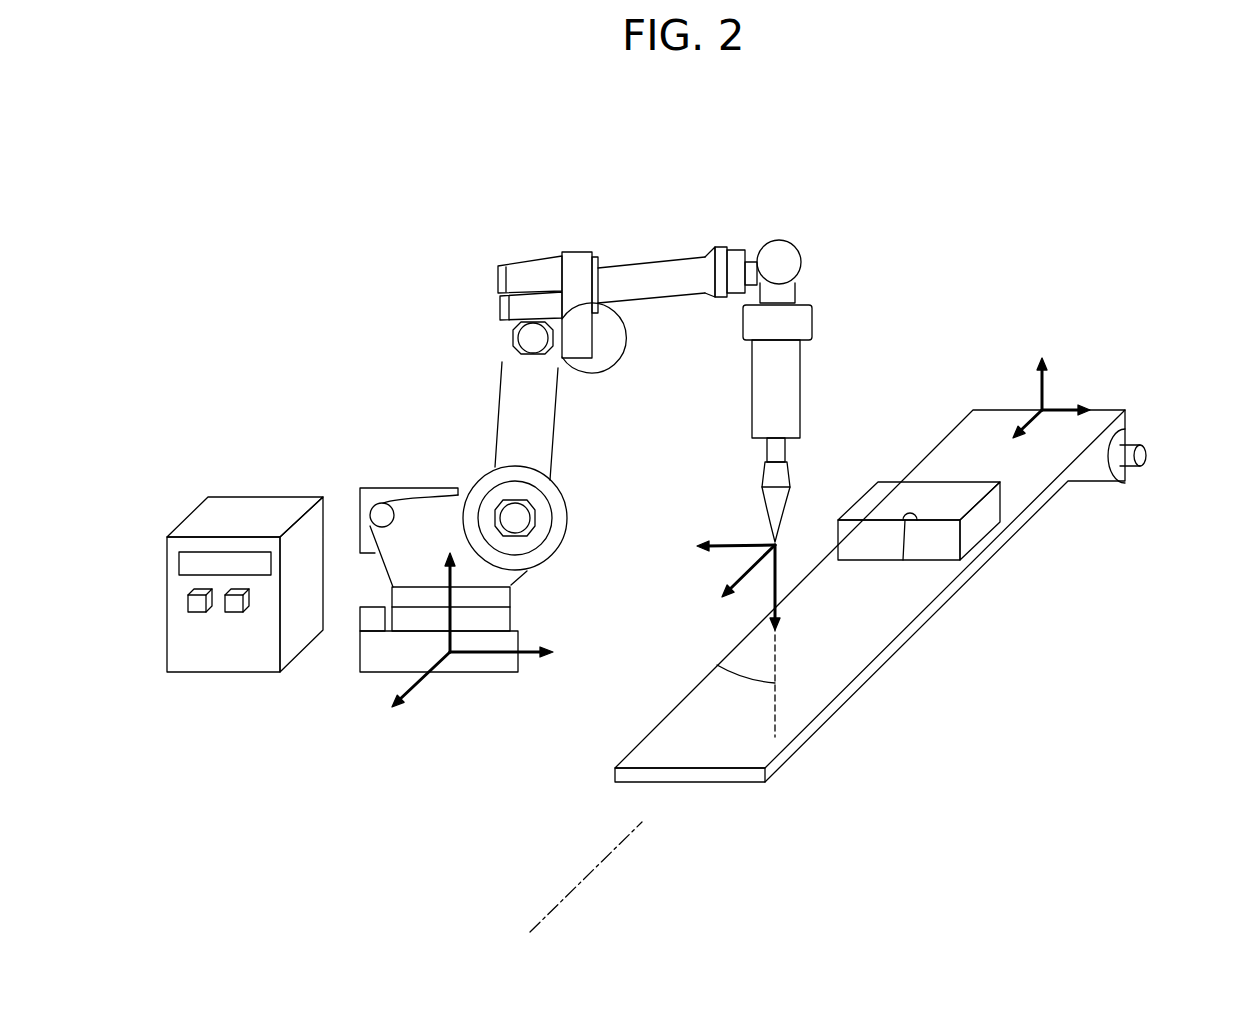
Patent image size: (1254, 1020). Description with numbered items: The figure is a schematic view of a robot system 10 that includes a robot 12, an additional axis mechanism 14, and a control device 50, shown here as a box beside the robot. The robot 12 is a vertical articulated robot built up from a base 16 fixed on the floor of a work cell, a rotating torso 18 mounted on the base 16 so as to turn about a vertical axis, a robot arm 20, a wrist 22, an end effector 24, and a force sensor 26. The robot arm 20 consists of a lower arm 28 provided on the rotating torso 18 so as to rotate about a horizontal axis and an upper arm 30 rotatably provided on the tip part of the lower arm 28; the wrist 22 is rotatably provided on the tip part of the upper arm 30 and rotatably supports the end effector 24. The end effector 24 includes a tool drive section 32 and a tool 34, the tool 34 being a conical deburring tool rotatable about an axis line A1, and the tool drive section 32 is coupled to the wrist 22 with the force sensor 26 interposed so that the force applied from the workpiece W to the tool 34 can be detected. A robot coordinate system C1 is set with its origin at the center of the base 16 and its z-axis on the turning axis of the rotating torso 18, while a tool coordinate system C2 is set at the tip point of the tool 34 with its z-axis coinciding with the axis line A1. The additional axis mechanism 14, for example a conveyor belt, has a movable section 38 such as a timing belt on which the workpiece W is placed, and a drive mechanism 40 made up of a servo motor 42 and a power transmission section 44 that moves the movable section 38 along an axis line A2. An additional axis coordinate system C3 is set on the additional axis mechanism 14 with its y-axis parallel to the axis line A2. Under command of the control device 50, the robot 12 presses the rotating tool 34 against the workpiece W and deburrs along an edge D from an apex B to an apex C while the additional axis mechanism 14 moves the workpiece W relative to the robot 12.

The robot system 10 is at (990, 151).
The robot 12 is at (470, 220).
The additional axis mechanism 14 is at (1002, 653).
The base 16 is at (367, 650).
The rotating torso 18 is at (417, 507).
The robot arm 20 is at (578, 233).
The wrist 22 is at (796, 297).
The end effector 24 is at (720, 418).
The force sensor 26 is at (745, 322).
The lower arm 28 is at (518, 403).
The upper arm 30 is at (652, 275).
The tool drive section 32 is at (758, 376).
The tool 34 is at (762, 484).
The movable section 38 is at (970, 450).
The drive mechanism 40 is at (1122, 480).
The servo motor 42 is at (1130, 442).
The power transmission section 44 is at (1090, 484).
The control device 50 is at (232, 508).
The workpiece W is at (893, 497).
The axis line A1 is at (715, 664).
The axis line A2 is at (535, 924).
The apex B is at (838, 520).
The apex C is at (965, 526).
The edge D is at (903, 560).
The robot coordinate system C1 is at (490, 657).
The tool coordinate system C2 is at (732, 553).
The additional axis coordinate system C3 is at (1050, 387).